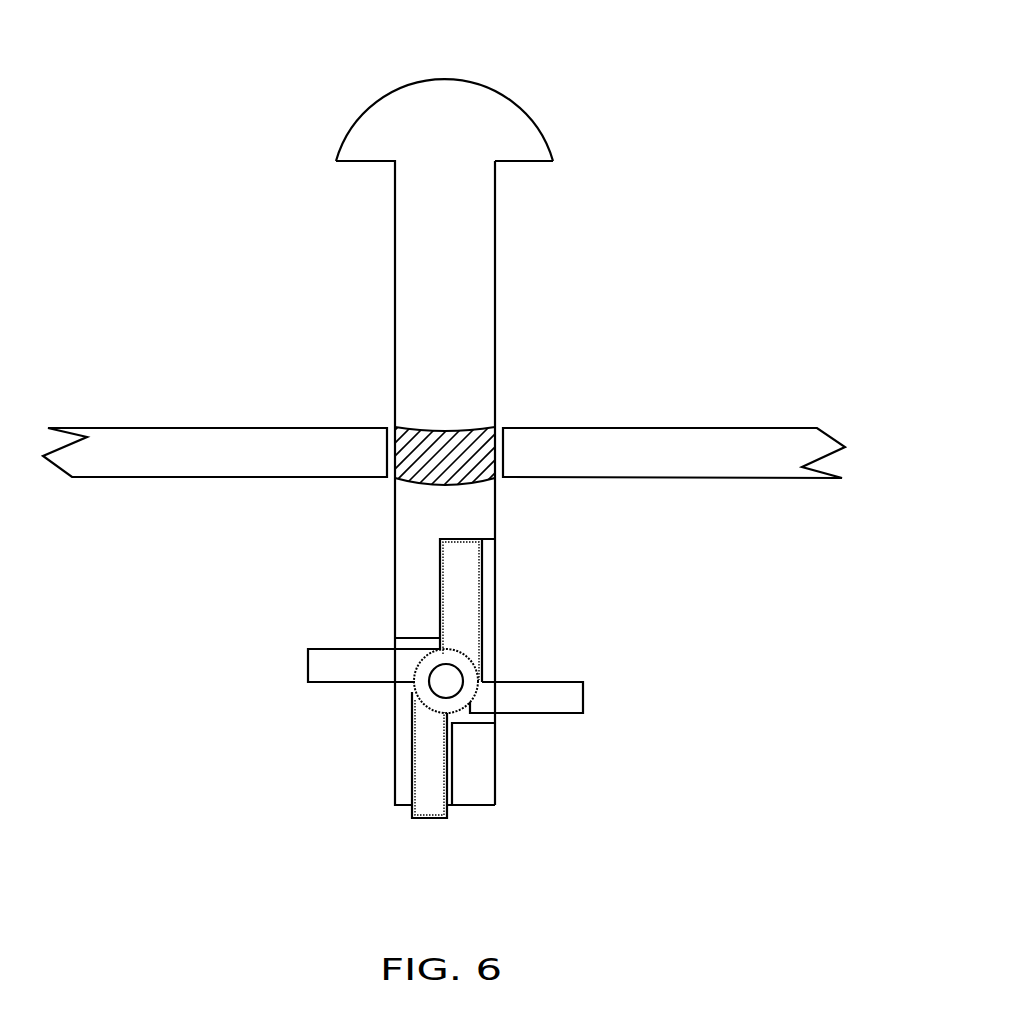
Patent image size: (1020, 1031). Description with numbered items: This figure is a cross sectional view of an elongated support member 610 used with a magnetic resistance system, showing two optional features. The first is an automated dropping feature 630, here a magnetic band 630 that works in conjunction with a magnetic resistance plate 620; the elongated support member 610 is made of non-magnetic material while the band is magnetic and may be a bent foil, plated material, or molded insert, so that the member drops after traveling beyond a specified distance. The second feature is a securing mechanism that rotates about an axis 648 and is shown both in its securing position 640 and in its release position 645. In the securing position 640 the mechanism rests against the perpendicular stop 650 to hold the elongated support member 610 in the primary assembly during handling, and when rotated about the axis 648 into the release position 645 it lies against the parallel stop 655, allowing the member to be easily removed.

The elongated support member 610 is at (450, 106).
The magnetic resistance plate 620 is at (698, 417).
The automated dropping feature 630 is at (453, 407).
The securing mechanism in securing position 640 is at (589, 697).
The securing mechanism in release position 645 is at (484, 626).
The axis 648 is at (416, 683).
The perpendicular stop 650 is at (418, 611).
The parallel stop 655 is at (469, 578).